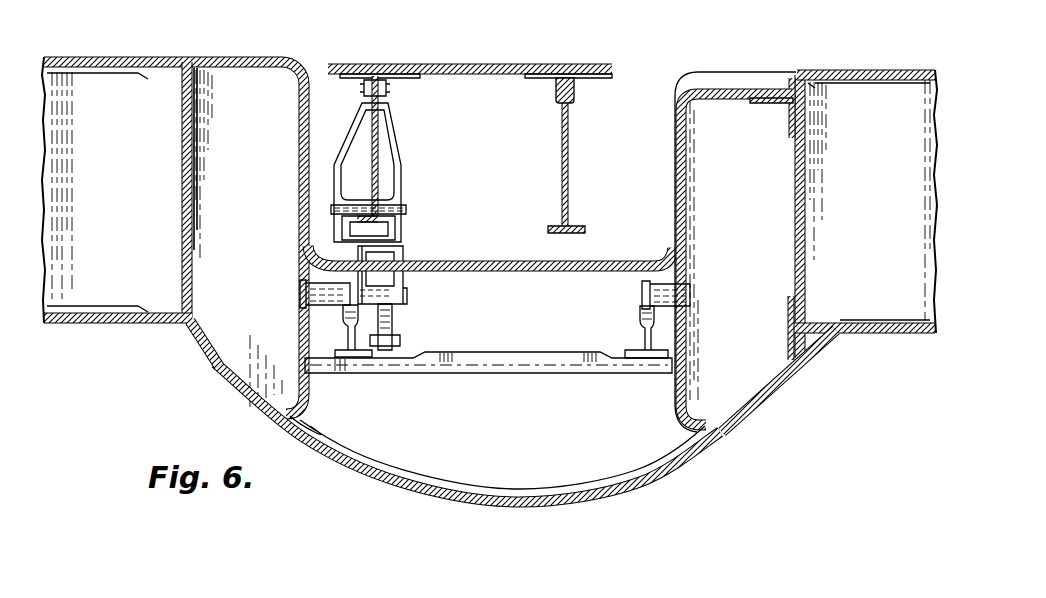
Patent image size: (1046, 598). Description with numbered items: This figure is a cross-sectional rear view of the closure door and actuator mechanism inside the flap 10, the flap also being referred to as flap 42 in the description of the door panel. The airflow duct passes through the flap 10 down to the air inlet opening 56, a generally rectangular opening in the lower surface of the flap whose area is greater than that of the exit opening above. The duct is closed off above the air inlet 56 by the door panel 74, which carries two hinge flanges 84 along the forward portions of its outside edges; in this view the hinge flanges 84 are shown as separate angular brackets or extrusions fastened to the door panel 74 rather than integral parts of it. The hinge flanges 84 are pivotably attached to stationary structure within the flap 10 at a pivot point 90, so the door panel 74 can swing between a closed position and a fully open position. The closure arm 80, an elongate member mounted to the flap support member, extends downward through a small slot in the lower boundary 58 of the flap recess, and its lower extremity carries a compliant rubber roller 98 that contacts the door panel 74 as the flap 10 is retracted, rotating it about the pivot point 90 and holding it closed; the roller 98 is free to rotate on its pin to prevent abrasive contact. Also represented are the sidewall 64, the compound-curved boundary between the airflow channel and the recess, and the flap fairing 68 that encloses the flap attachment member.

The flap 10 is at (116, 57).
The flap 42 is at (490, 64).
The air inlet opening 56 is at (392, 452).
The lower boundary of recess 58 is at (718, 91).
The sidewall 64 is at (675, 152).
The flap fairing 68 is at (220, 377).
The door panel 74 is at (530, 375).
The closure arm 80 is at (400, 180).
The hinge flanges 84 is at (349, 338).
The pivot point 90 is at (300, 293).
The roller 98 is at (386, 352).